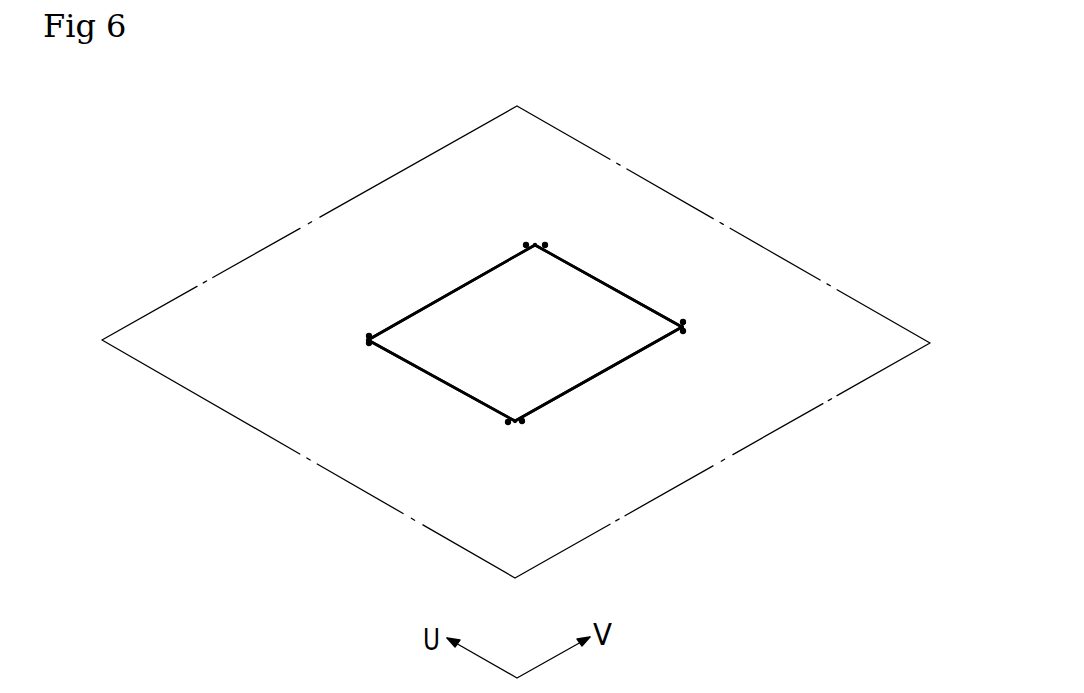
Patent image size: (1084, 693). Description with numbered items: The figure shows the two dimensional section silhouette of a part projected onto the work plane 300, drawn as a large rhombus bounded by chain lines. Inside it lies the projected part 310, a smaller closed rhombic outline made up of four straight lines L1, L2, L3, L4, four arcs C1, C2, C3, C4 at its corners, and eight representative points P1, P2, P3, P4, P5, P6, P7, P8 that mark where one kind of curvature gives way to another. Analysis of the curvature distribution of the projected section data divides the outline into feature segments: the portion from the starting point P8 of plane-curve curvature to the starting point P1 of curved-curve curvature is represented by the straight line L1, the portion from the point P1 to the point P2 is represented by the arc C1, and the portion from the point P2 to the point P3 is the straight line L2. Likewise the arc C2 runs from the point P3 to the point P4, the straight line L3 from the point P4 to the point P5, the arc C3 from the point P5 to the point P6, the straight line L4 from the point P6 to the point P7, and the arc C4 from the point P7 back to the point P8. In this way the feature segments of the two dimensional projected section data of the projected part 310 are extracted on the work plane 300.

The work plane 300 is at (723, 222).
The projected part 310 is at (467, 395).
The straight line L1 is at (447, 292).
The straight line L2 is at (417, 370).
The straight line L3 is at (605, 372).
The straight line L4 is at (615, 290).
The arc C1 is at (368, 339).
The arc C2 is at (515, 422).
The arc C3 is at (683, 327).
The arc C4 is at (535, 244).
The representative point P1 is at (368, 335).
The representative point P2 is at (368, 344).
The representative point P3 is at (508, 423).
The representative point P4 is at (522, 422).
The representative point P5 is at (683, 331).
The representative point P6 is at (683, 322).
The representative point P7 is at (545, 245).
The representative point P8 is at (526, 245).